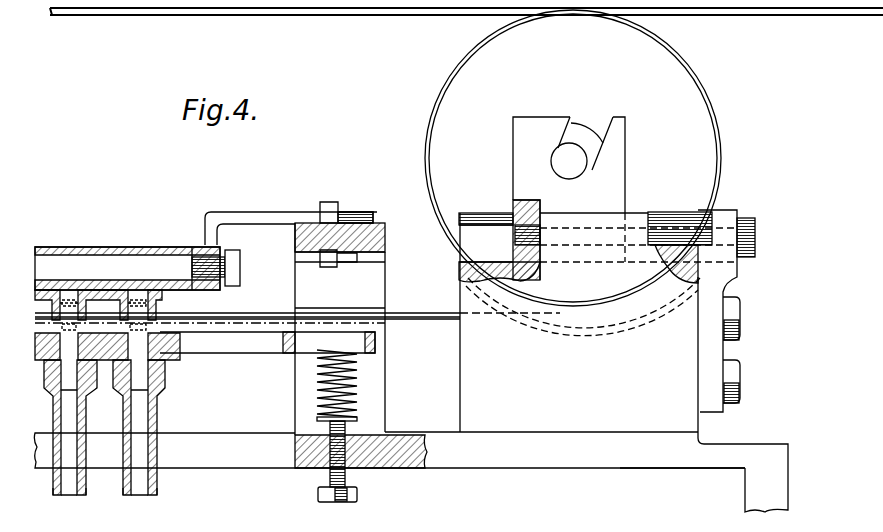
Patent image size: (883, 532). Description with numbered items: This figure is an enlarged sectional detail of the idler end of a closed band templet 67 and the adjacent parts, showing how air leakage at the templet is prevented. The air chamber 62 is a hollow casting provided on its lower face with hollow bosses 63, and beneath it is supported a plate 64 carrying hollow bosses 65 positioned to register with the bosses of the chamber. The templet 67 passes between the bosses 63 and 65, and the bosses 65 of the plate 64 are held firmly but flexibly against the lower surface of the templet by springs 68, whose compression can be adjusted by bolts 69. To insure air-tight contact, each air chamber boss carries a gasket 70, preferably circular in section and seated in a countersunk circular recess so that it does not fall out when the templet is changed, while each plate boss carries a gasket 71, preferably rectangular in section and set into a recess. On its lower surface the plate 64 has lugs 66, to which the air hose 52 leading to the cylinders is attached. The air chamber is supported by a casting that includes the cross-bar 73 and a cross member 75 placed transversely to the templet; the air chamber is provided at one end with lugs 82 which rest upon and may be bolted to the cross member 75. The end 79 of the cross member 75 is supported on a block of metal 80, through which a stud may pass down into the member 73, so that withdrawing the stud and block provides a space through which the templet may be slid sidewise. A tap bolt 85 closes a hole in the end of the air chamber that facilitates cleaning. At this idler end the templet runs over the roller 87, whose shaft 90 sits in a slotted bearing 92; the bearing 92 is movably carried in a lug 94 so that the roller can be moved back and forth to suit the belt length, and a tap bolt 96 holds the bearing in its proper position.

The air hose 52 is at (137, 490).
The air chamber 62 is at (85, 262).
The hollow boss 63 is at (50, 298).
The plate 64 is at (246, 350).
The hollow boss 65 is at (50, 324).
The lug 66 is at (62, 376).
The templet 67 is at (352, 16).
The spring 68 is at (330, 378).
The bolt 69 is at (330, 478).
The gasket 70 is at (70, 308).
The gasket 71 is at (148, 325).
The cross-bar 73 is at (228, 462).
The cross member 75 is at (382, 274).
The end 79 is at (370, 296).
The block of metal 80 is at (385, 327).
The lug 82 is at (245, 213).
The tap bolt 85 is at (240, 254).
The roller 87 is at (452, 83).
The shaft 90 is at (555, 160).
The bearing 92 is at (613, 164).
The lug 94 is at (560, 316).
The tap bolt 96 is at (660, 248).